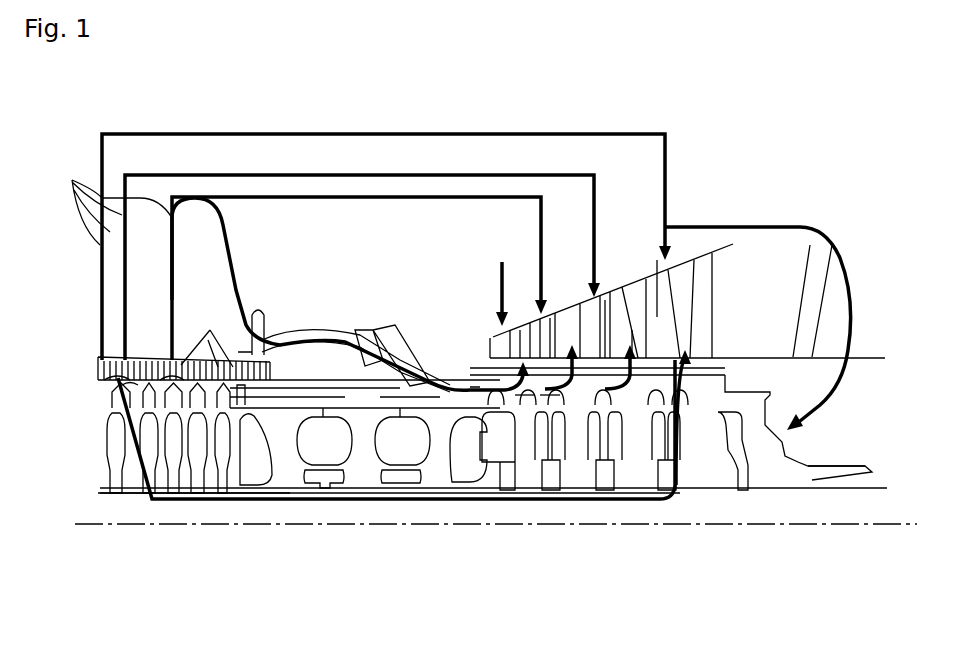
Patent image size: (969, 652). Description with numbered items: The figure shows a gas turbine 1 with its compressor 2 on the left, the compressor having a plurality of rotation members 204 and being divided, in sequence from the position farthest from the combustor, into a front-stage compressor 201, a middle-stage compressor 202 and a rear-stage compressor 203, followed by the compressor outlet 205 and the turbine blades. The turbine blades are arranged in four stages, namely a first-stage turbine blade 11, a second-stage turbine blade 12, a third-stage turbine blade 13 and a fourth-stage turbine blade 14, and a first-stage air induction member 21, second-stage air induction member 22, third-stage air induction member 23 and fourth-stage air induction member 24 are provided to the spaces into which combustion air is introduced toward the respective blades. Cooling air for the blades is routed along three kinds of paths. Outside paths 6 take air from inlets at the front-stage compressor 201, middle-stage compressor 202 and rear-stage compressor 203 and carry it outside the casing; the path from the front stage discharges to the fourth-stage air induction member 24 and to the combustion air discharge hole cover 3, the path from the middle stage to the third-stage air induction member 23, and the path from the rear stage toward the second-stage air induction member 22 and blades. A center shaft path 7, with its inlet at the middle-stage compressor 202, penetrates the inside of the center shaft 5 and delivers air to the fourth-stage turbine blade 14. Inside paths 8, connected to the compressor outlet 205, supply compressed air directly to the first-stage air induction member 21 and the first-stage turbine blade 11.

The gas turbine 1 is at (889, 228).
The compressor 2 is at (100, 562).
The combustion air discharge hole cover 3 is at (796, 450).
The center shaft 5 is at (763, 524).
The outside path 6 is at (72, 182).
The center shaft path 7 is at (625, 498).
The inside path 8 is at (482, 285).
The first-stage turbine blade 11 is at (548, 400).
The second-stage turbine blade 12 is at (566, 322).
The third-stage turbine blade 13 is at (630, 332).
The fourth-stage turbine blade 14 is at (702, 288).
The first-stage air induction member 21 is at (528, 382).
The second-stage air induction member 22 is at (540, 333).
The third-stage air induction member 23 is at (605, 300).
The fourth-stage air induction member 24 is at (656, 284).
The front-stage compressor 201 is at (105, 382).
The middle-stage compressor 202 is at (132, 381).
The rear-stage compressor 203 is at (172, 372).
The plurality of rotation members 204 is at (222, 335).
The compressor outlet 205 is at (313, 375).